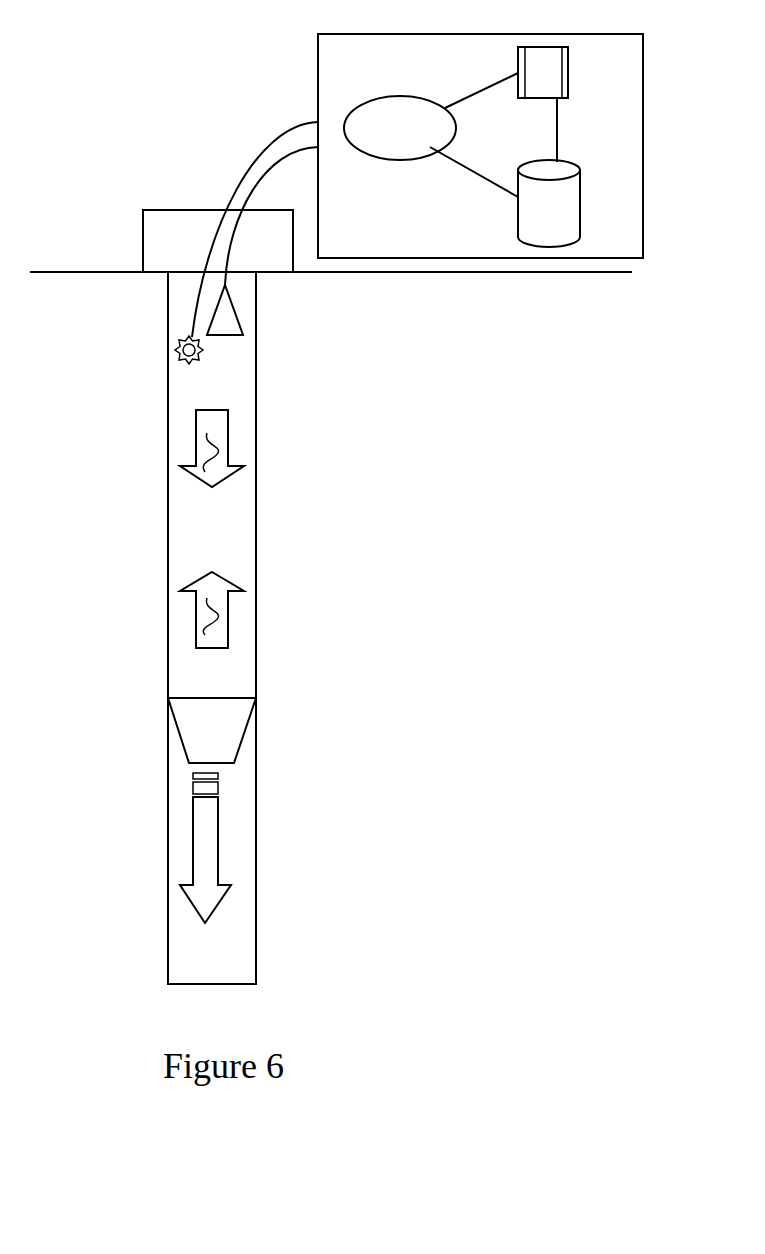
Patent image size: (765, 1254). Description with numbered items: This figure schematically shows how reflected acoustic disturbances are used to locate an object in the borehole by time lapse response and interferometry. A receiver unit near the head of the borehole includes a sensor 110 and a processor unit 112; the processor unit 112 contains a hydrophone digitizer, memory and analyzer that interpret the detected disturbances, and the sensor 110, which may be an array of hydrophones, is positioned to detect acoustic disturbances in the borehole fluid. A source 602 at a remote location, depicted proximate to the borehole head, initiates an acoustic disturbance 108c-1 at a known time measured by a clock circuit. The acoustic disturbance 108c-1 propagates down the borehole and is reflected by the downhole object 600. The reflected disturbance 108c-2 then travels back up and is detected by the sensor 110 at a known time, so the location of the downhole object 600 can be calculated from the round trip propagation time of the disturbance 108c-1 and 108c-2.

The processor unit 112 is at (417, 168).
The source 602 is at (177, 341).
The sensor 110 is at (238, 318).
The acoustic disturbance 108c-1 is at (229, 423).
The reflected disturbance 108c-2 is at (229, 612).
The downhole object 600 is at (212, 810).